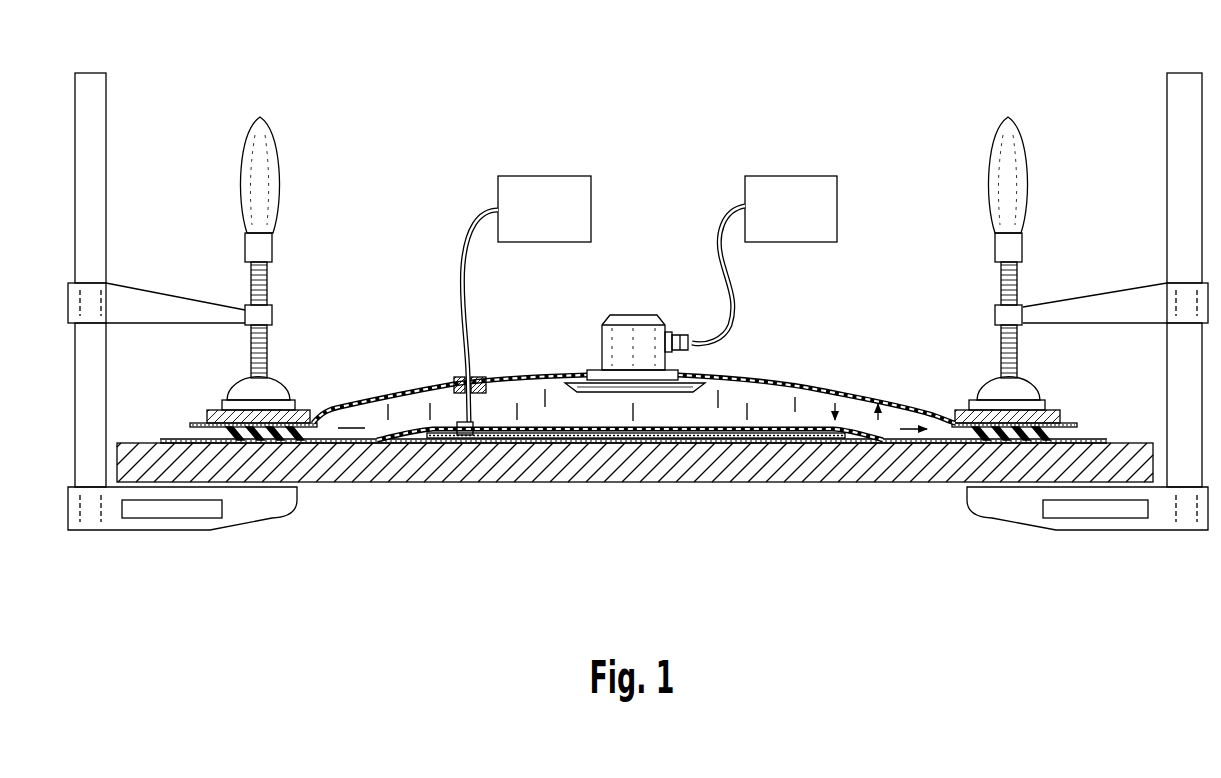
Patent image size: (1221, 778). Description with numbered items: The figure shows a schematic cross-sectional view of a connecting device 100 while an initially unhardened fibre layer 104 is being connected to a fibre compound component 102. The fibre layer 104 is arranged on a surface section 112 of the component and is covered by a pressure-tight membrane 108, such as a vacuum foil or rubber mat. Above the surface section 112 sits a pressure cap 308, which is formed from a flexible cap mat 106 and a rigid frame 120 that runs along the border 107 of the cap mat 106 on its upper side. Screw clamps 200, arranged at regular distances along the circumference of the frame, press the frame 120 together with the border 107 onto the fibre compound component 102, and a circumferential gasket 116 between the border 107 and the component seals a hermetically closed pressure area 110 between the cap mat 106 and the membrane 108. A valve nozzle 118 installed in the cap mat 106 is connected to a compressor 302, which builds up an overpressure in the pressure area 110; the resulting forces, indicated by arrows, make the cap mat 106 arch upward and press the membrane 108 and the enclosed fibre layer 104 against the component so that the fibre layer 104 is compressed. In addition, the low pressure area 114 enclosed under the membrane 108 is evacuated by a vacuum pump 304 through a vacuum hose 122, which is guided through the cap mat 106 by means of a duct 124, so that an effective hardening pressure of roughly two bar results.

The connecting device 100 is at (383, 90).
The fibre compound component 102 is at (541, 458).
The fibre layer 104 is at (695, 444).
The cap mat 106 is at (533, 376).
The border 107 is at (202, 424).
The pressure-tight membrane 108 is at (857, 437).
The pressure area 110 is at (571, 420).
The surface section 112 is at (423, 438).
The low pressure area 114 is at (416, 441).
The gasket 116 is at (218, 433).
The valve nozzle 118 is at (683, 334).
The frame 120 is at (293, 410).
The vacuum hose 122 is at (463, 259).
The duct 124 is at (457, 380).
The screw clamps 200 is at (253, 183).
The compressor 302 is at (772, 221).
The vacuum pump 304 is at (526, 221).
The pressure cap 308 is at (757, 382).